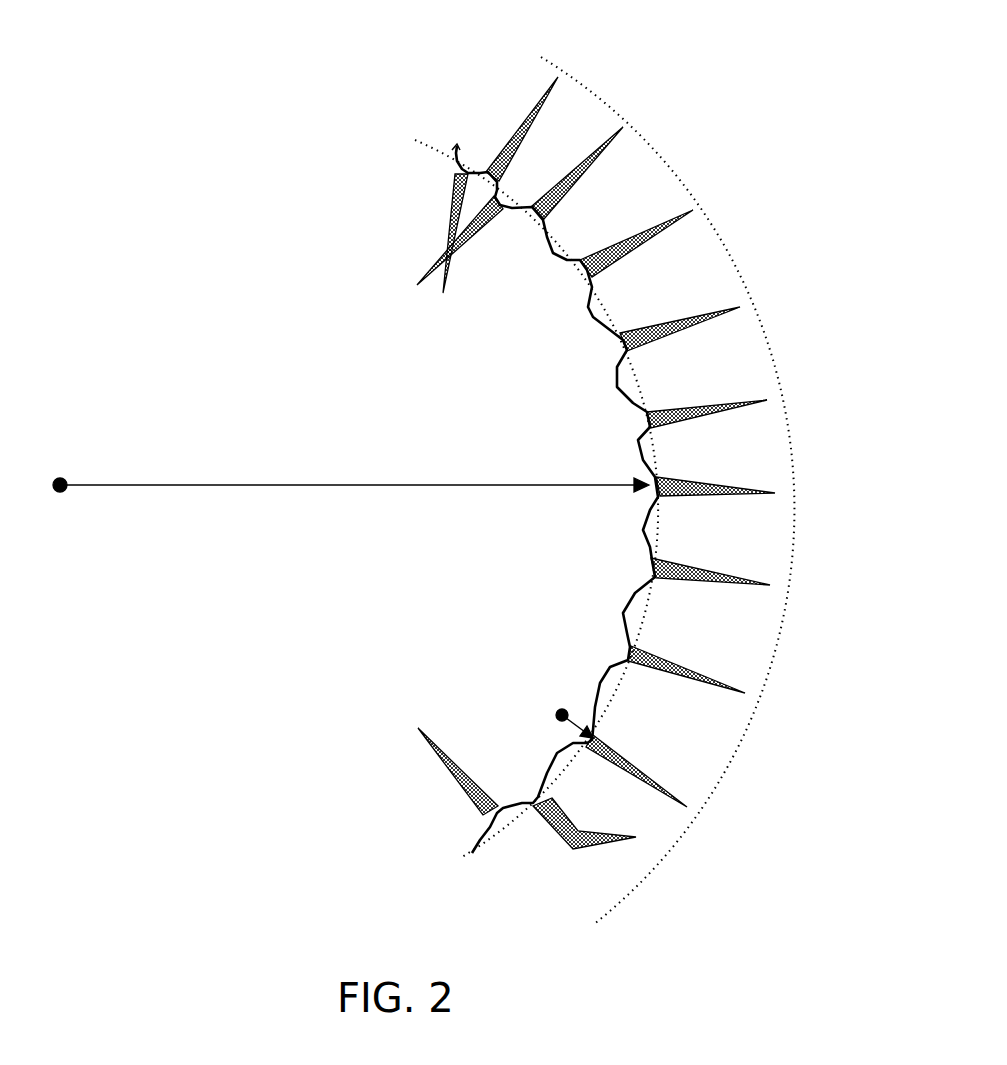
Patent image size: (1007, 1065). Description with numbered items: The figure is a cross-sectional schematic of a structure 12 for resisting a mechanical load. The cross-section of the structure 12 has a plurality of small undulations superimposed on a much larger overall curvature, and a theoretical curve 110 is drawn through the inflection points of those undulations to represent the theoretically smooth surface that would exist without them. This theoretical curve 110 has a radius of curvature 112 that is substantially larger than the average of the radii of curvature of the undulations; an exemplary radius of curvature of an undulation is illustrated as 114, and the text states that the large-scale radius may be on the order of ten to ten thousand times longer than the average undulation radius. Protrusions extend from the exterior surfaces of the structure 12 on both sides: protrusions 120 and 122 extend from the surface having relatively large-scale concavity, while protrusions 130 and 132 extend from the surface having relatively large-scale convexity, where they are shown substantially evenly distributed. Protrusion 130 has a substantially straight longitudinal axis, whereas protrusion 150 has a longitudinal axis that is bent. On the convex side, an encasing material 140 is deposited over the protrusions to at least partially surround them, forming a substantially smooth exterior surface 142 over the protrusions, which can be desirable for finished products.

The structure 12 is at (455, 160).
The theoretical curve 110 is at (438, 147).
The radius of curvature 112 is at (351, 475).
The radius of curvature of an undulation 114 is at (552, 711).
The protrusion 120 is at (456, 214).
The protrusion 122 is at (483, 228).
The protrusion 130 is at (524, 118).
The protrusion 132 is at (603, 156).
The encasing material 140 is at (683, 277).
The exterior surface 142 is at (779, 372).
The protrusion 150 is at (555, 830).